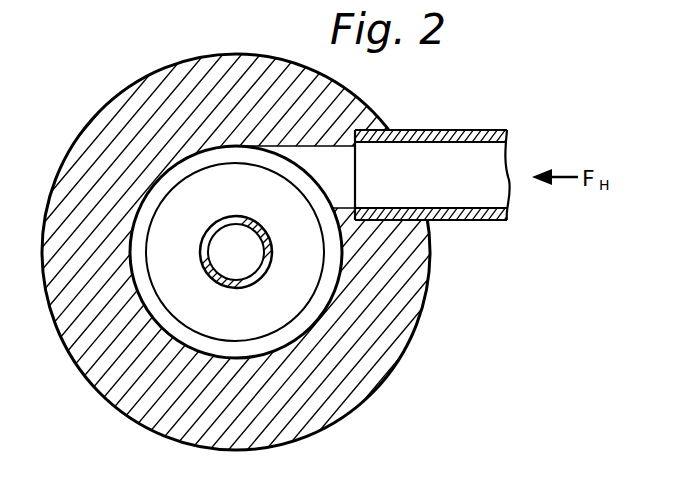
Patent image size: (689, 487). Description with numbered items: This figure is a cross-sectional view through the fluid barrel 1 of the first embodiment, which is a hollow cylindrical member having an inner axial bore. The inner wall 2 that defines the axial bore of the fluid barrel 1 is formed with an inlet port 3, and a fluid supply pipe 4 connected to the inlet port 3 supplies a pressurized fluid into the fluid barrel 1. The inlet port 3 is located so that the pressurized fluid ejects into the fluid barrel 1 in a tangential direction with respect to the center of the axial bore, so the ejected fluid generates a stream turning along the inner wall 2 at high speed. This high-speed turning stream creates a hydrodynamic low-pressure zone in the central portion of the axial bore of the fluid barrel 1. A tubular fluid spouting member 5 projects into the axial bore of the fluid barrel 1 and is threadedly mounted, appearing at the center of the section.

The fluid barrel 1 is at (412, 318).
The inner wall 2 is at (130, 269).
The inlet port 3 is at (327, 163).
The fluid supply pipe 4 is at (465, 130).
The tubular fluid spouting member 5 is at (265, 280).